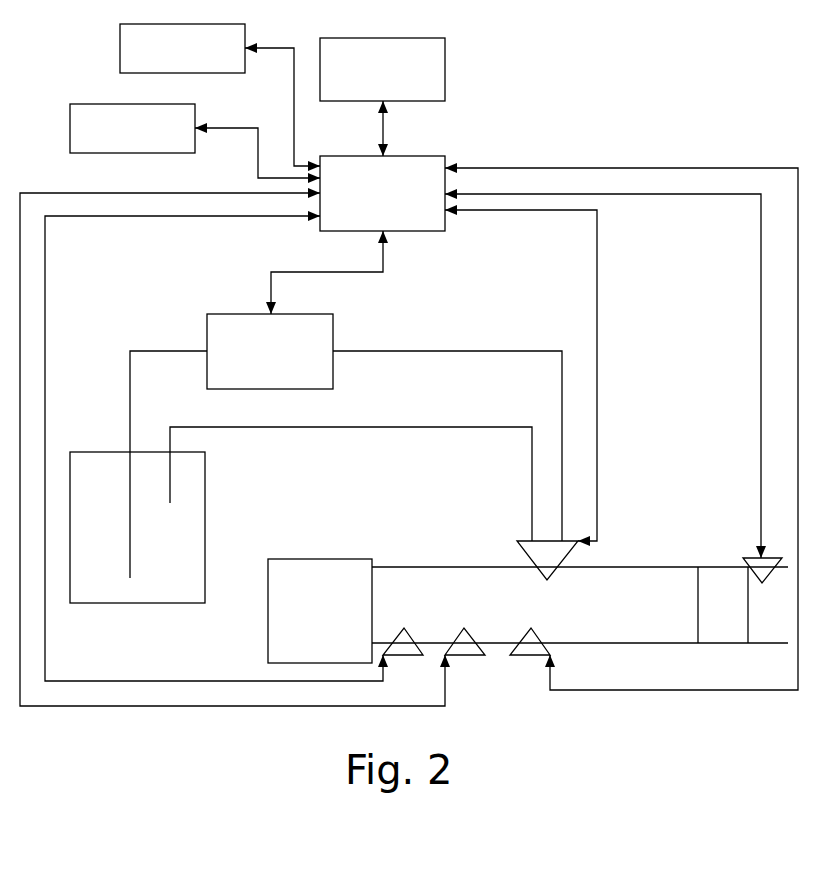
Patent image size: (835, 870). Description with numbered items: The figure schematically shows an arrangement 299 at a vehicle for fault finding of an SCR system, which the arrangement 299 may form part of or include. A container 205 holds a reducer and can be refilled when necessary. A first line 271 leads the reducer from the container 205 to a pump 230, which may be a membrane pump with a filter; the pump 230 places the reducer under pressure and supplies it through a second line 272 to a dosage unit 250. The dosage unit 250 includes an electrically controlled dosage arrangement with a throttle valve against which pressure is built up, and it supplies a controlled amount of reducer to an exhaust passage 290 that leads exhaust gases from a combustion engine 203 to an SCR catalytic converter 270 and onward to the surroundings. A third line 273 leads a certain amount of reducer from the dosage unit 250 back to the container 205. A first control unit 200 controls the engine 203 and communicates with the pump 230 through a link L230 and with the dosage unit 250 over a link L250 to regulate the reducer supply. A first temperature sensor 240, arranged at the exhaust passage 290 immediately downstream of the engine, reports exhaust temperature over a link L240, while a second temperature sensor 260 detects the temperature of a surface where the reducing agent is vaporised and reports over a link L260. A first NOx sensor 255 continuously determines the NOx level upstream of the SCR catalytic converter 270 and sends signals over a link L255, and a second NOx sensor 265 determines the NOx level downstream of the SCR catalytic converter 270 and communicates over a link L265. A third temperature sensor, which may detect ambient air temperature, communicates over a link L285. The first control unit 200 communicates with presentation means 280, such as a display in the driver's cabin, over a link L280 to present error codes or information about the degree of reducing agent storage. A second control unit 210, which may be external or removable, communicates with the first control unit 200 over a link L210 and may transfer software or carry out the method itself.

The arrangement 299 is at (530, 95).
The first control unit 200 is at (382, 193).
The second control unit 210 is at (382, 69).
The presentation means 280 is at (157, 88).
The pump 230 is at (270, 351).
The combustion engine 203 is at (320, 611).
The container 205 is at (205, 530).
The SCR catalytic converter 270 is at (723, 605).
The exhaust passage 290 is at (648, 642).
The first temperature sensor 240 is at (403, 628).
The dosage unit 250 is at (517, 548).
The first NOx sensor 255 is at (531, 628).
The second temperature sensor 260 is at (465, 628).
The second NOx sensor 265 is at (745, 556).
The first line 271 is at (130, 352).
The second line 272 is at (377, 351).
The third line 273 is at (398, 428).
The link L285 is at (298, 30).
The link L280 is at (258, 170).
The link L210 is at (385, 125).
The link L230 is at (270, 290).
The link L240 is at (45, 280).
The link L250 is at (597, 268).
The link L255 is at (618, 692).
The link L260 is at (448, 690).
The link L265 is at (761, 315).